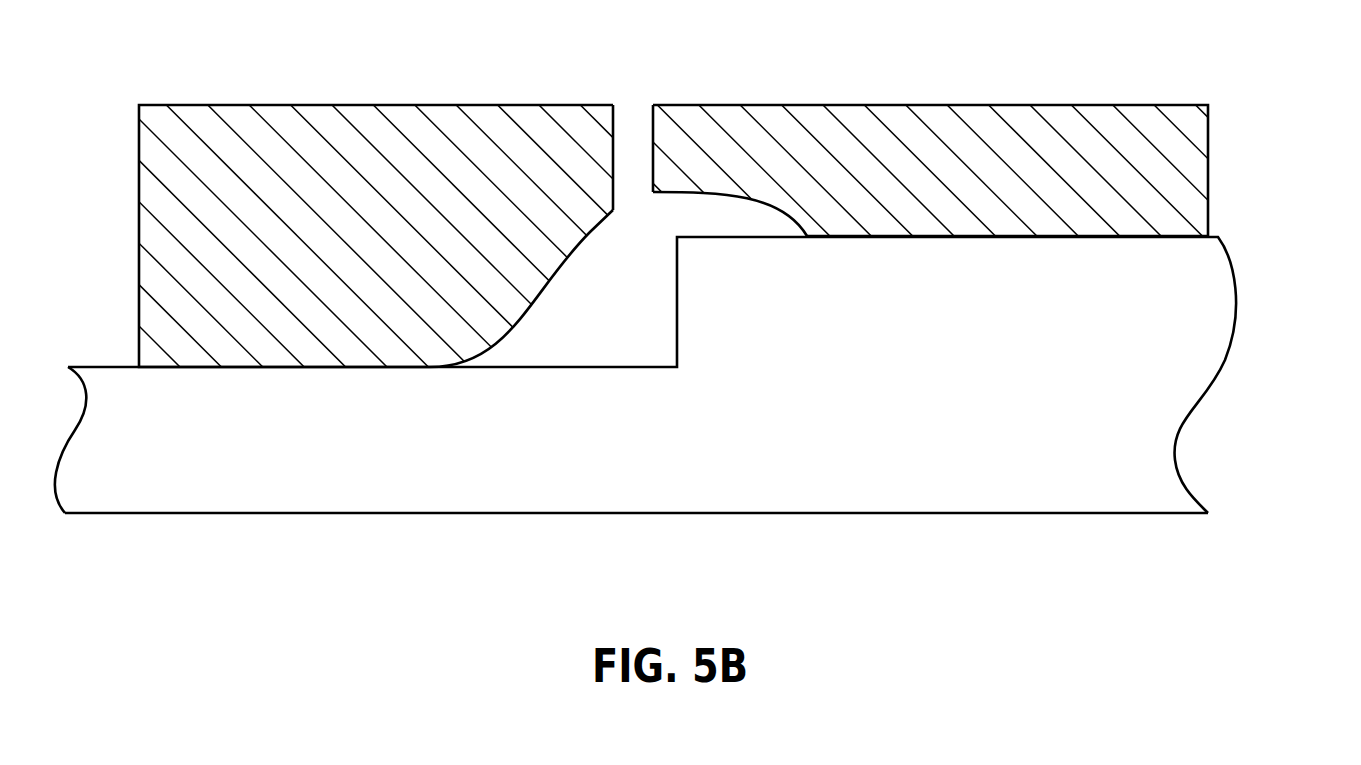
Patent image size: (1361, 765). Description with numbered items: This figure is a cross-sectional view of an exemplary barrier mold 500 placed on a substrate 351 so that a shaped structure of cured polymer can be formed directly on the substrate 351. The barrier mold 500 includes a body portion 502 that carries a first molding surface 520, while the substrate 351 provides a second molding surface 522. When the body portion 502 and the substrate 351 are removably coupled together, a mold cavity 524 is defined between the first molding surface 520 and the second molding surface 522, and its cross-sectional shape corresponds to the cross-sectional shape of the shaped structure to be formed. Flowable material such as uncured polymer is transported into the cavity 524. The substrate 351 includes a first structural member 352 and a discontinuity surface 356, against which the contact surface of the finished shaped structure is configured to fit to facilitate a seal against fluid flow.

The barrier mold 500 is at (104, 200).
The body portion 502 is at (212, 105).
The first molding surface 520 is at (565, 258).
The second molding surface 522 is at (610, 367).
The mold cavity 524 is at (615, 277).
The substrate 351 is at (1278, 235).
The first structural member 352 is at (210, 513).
The discontinuity surface 356 is at (1110, 282).